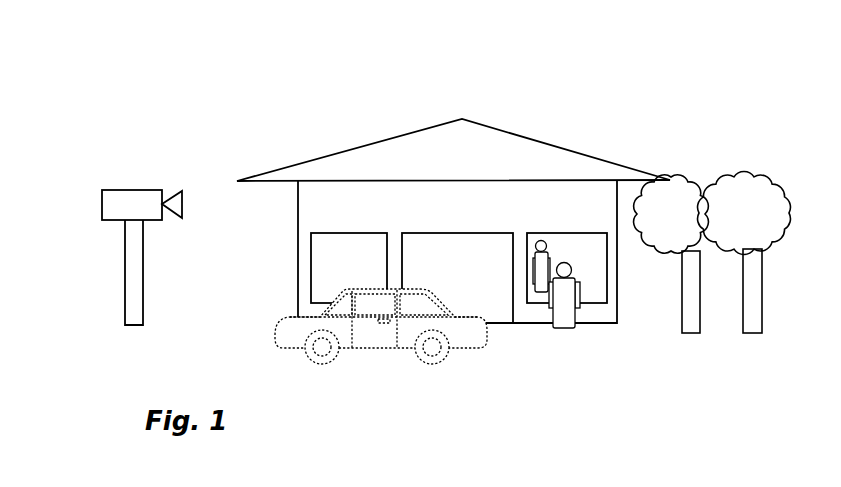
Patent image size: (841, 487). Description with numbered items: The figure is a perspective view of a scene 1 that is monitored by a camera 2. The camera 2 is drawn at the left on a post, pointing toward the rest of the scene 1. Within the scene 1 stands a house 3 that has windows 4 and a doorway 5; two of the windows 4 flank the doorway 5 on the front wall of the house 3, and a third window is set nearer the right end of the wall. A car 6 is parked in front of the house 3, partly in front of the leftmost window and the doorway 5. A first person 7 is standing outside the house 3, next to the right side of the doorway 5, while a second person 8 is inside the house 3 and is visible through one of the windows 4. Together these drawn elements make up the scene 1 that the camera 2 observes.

The scene 1 is at (590, 110).
The camera 2 is at (132, 190).
The house 3 is at (597, 203).
The windows 4 is at (311, 265).
The doorway 5 is at (467, 252).
The car 6 is at (275, 330).
The first person 7 is at (553, 325).
The second person 8 is at (535, 233).